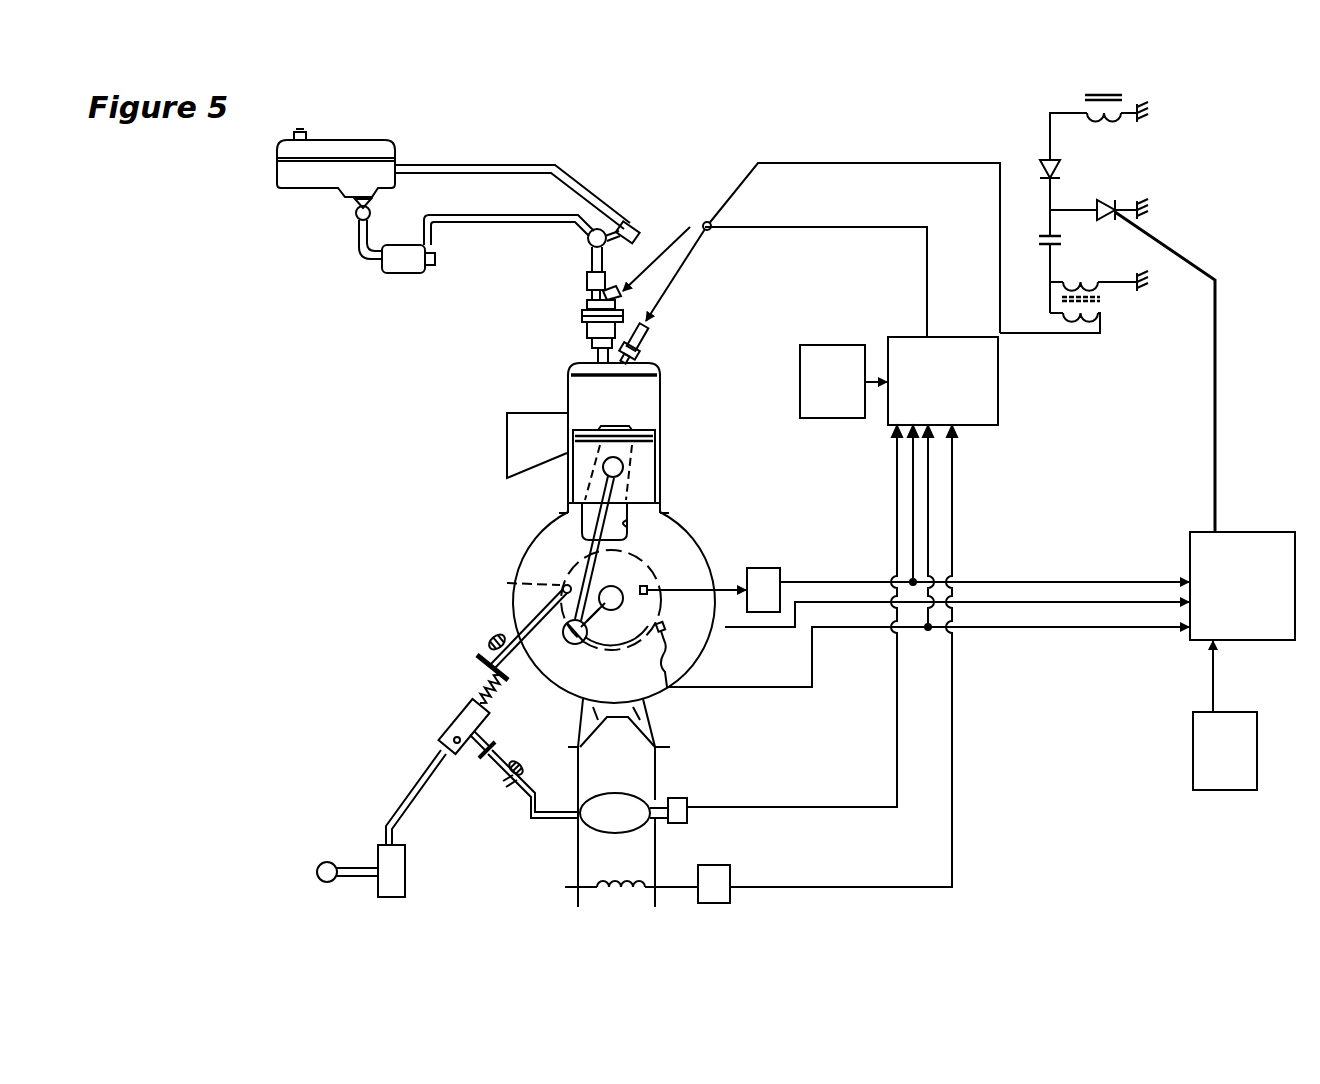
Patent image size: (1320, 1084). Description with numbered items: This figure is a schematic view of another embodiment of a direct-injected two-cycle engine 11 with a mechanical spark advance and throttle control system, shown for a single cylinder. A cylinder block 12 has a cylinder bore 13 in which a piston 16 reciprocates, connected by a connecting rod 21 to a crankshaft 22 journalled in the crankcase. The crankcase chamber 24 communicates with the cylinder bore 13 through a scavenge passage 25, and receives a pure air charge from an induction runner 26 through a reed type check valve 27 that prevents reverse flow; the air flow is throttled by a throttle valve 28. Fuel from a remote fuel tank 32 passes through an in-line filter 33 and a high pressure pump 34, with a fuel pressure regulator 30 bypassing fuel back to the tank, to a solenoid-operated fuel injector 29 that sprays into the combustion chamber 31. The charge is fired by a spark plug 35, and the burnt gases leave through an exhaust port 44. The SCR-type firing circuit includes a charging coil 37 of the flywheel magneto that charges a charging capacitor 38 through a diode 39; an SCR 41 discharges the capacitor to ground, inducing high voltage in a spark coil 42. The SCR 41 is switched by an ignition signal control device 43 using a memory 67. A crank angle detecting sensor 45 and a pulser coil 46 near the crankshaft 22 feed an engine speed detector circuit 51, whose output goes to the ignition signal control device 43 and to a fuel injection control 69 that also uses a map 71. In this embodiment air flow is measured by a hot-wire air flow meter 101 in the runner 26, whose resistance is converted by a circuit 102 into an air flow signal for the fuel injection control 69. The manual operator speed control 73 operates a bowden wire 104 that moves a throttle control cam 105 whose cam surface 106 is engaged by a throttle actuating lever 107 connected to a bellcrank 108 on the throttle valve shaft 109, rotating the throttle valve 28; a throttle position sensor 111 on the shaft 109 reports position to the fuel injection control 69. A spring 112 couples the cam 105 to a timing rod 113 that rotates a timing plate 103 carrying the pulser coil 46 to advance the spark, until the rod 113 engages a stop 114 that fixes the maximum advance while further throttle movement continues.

The engine 11 is at (712, 335).
The cylinder block 12 is at (565, 480).
The cylinder bore 13 is at (655, 405).
The piston 16 is at (645, 455).
The connecting rod 21 is at (587, 548).
The crankshaft 22 is at (640, 633).
The crankcase chamber 24 is at (568, 677).
The scavenge passage 25 is at (665, 532).
The induction manifold runner 26 is at (577, 862).
The reed type check valve 27 is at (643, 717).
The throttle valve 28 is at (598, 795).
The fuel injector 29 is at (583, 321).
The fuel pressure regulator 30 is at (630, 224).
The combustion chamber 31 is at (652, 368).
The fuel tank 32 is at (352, 150).
The in-line filter 33 is at (357, 216).
The high pressure pump 34 is at (392, 274).
The spark plug 35 is at (650, 333).
The charging coil 37 is at (1095, 95).
The charging capacitor 38 is at (1040, 238).
The diode 39 is at (1062, 170).
The SCR 41 is at (1105, 195).
The spark coil 42 is at (1088, 280).
The ignition signal control device 43 is at (1190, 548).
The exhaust port 44 is at (541, 412).
The crank angle detecting sensor 45 is at (665, 620).
The pulser coil 46 is at (650, 595).
The engine speed detector circuit 51 is at (778, 568).
The memory 67 is at (1193, 740).
The fuel injection control 69 is at (998, 385).
The map 71 is at (797, 385).
The manual operator speed control 73 is at (332, 860).
The air flow meter 101 is at (600, 905).
The circuit 102 is at (715, 865).
The timing plate 103 is at (507, 583).
The bowden wire 104 is at (410, 807).
The throttle control cam 105 is at (452, 732).
The cam surface 106 is at (465, 760).
The throttle actuating lever 107 is at (482, 733).
The bellcrank 108 is at (534, 806).
The throttle valve shaft 109 is at (552, 822).
The throttle position sensor 111 is at (688, 800).
The spring 112 is at (477, 693).
The timing rod 113 is at (537, 622).
The stop 114 is at (482, 642).